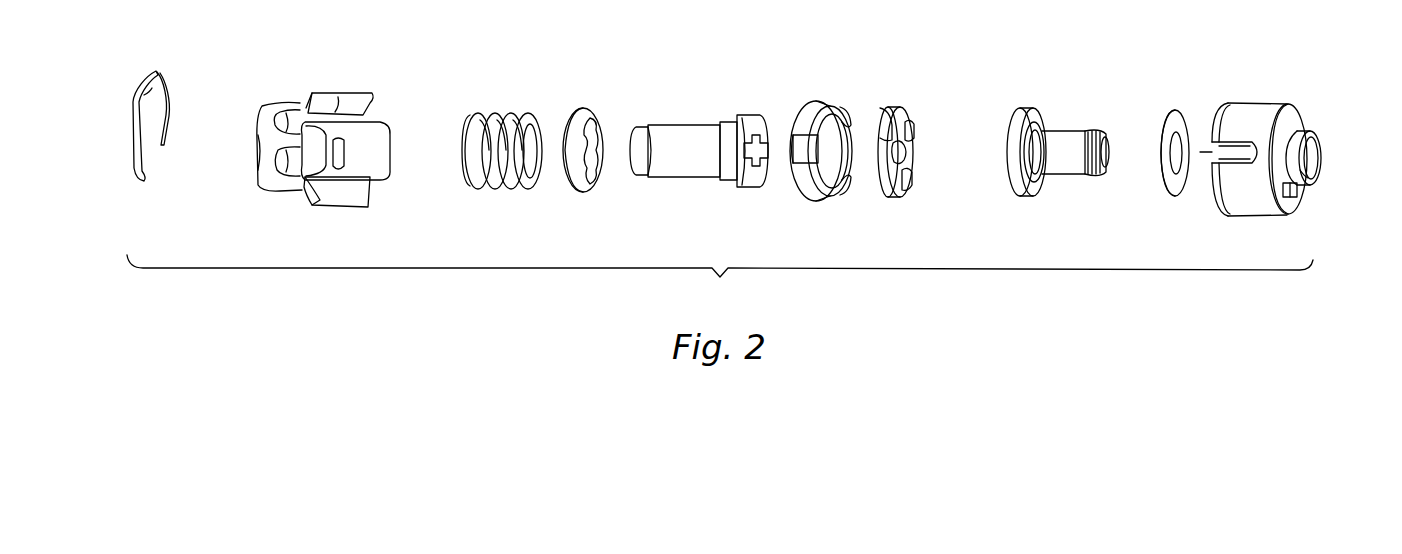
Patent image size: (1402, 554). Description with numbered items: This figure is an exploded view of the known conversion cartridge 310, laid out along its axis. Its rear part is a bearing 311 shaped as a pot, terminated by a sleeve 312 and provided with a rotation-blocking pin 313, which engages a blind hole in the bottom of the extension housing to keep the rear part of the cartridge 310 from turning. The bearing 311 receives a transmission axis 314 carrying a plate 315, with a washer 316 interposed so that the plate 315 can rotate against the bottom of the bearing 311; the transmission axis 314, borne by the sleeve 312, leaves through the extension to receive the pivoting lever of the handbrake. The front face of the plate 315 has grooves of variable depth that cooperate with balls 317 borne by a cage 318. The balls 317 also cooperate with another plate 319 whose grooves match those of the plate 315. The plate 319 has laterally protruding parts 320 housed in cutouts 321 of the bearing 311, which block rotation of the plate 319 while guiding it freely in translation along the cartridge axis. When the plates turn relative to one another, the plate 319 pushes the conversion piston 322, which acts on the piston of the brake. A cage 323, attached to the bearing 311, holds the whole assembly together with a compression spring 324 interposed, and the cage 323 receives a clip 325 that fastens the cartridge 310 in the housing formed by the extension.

The cartridge 310 is at (720, 281).
The bearing 311 is at (1261, 131).
The sleeve 312 is at (1297, 177).
The rotation-blocking pin 313 is at (1288, 202).
The transmission axis 314 is at (1063, 150).
The plate 315 is at (1059, 120).
The washer 316 is at (1175, 110).
The balls 317 is at (910, 130).
The cage 318 is at (926, 120).
The plate 319 is at (813, 122).
The laterally protruding parts 320 is at (795, 134).
The cutouts 321 is at (1207, 152).
The conversion piston 322 is at (677, 137).
The cage 323 is at (347, 92).
The compression spring 324 is at (500, 110).
The clip 325 is at (158, 70).